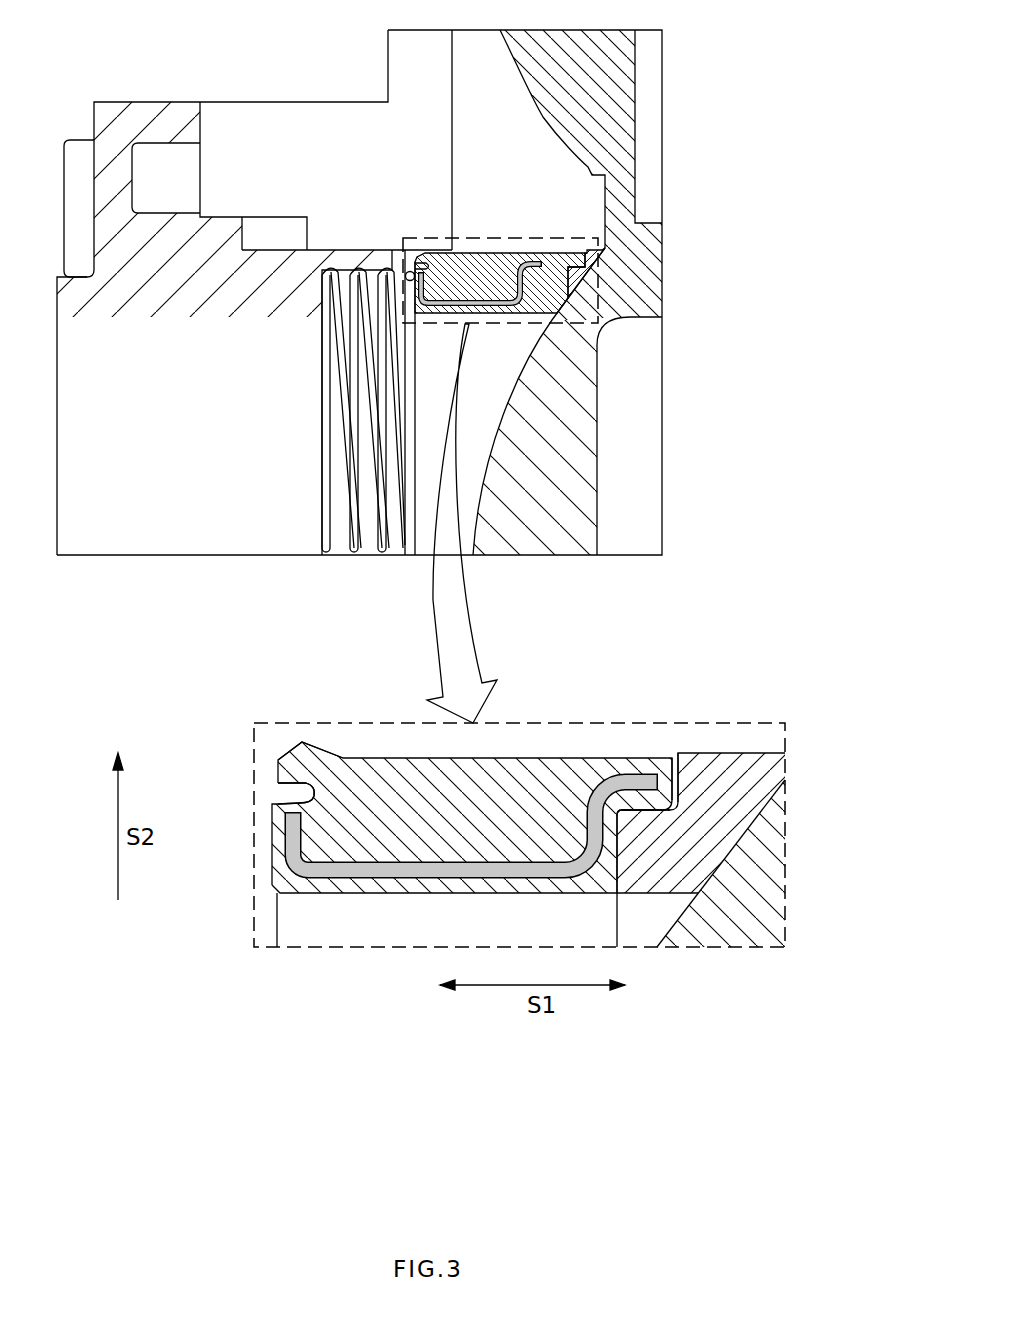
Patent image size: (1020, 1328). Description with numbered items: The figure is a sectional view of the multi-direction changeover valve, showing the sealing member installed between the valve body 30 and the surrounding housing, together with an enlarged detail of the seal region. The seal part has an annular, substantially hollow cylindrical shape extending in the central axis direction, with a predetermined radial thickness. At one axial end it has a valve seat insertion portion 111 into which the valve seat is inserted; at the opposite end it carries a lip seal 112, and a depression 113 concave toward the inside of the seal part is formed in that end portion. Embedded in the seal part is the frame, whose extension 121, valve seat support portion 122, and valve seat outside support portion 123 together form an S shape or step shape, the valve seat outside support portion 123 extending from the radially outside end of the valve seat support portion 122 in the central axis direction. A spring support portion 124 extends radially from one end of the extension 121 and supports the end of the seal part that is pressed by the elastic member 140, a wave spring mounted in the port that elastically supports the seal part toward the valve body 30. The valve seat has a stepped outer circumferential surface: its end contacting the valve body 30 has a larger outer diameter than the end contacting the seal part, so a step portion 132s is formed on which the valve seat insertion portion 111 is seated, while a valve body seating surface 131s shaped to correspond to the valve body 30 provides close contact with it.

The valve body 30 is at (652, 268).
The elastic member 140 is at (355, 556).
The valve seat insertion portion 111 is at (667, 778).
The lip seal 112 is at (302, 753).
The depression 113 is at (290, 792).
The extension 121 is at (383, 872).
The valve seat support portion 122 is at (592, 830).
The valve seat outside support portion 123 is at (625, 781).
The spring support portion 124 is at (293, 840).
The valve body seating surface 131s is at (710, 873).
The step portion 132s is at (643, 825).